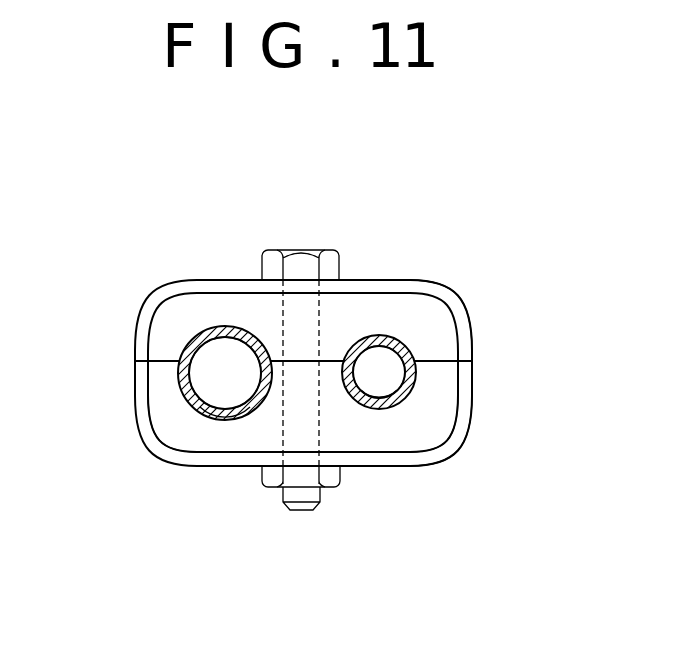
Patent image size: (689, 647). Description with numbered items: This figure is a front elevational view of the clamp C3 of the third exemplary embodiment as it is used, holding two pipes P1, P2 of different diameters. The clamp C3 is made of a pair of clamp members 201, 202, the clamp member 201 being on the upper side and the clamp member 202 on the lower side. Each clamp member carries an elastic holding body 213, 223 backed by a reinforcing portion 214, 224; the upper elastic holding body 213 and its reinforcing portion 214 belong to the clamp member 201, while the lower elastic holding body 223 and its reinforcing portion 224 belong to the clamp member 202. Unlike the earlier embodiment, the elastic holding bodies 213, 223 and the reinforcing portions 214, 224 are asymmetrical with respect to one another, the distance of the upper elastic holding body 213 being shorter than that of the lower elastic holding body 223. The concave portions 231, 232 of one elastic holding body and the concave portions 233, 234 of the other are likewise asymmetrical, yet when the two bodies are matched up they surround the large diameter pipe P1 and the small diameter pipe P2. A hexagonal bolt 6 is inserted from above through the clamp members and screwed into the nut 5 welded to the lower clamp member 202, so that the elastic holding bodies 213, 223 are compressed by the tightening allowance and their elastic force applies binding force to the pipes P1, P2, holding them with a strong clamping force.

The clamp C3 is at (470, 280).
The clamp member 201 is at (430, 285).
The clamp member 202 is at (440, 460).
The elastic holding body 213 is at (238, 302).
The reinforcing portion 214 is at (373, 285).
The elastic holding body 223 is at (177, 430).
The reinforcing portion 224 is at (413, 458).
The concave portion 231 is at (227, 326).
The concave portion 232 is at (397, 340).
The concave portion 233 is at (225, 422).
The concave portion 234 is at (380, 408).
The large diameter pipe P1 is at (187, 347).
The small diameter pipe P2 is at (407, 392).
The nut 5 is at (270, 482).
The hexagonal bolt 6 is at (300, 262).